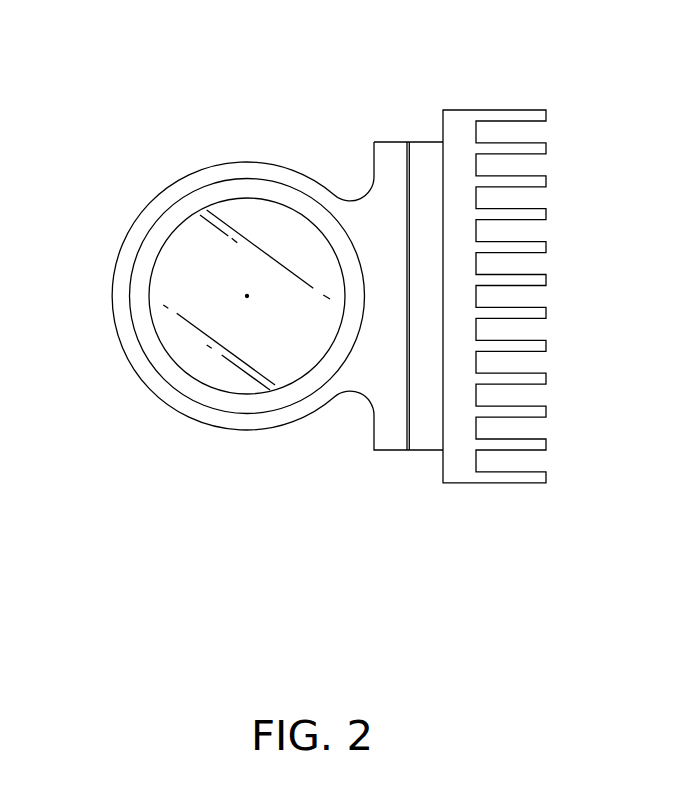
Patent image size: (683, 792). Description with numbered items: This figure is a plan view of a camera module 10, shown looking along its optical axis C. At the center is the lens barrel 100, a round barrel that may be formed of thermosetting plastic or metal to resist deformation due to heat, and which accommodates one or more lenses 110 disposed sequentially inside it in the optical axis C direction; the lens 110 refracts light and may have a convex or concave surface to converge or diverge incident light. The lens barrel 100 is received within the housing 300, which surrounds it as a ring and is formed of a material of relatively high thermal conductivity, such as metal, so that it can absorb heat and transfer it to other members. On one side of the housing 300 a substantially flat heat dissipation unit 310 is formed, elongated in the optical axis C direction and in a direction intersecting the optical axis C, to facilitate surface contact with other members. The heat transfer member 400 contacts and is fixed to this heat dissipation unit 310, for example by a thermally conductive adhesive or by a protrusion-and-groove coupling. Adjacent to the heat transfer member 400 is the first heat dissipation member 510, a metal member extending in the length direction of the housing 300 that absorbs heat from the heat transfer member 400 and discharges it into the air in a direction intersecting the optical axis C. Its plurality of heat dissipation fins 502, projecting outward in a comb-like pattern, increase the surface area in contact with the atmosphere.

The camera module 10 is at (125, 97).
The lens barrel 100 is at (178, 377).
The lens 110 is at (197, 267).
The optical axis C is at (248, 298).
The housing 300 is at (118, 322).
The heat dissipation unit 310 is at (408, 197).
The heat transfer member 400 is at (423, 441).
The first heat dissipation member 510 is at (468, 120).
The heat dissipation fins 502 is at (537, 409).